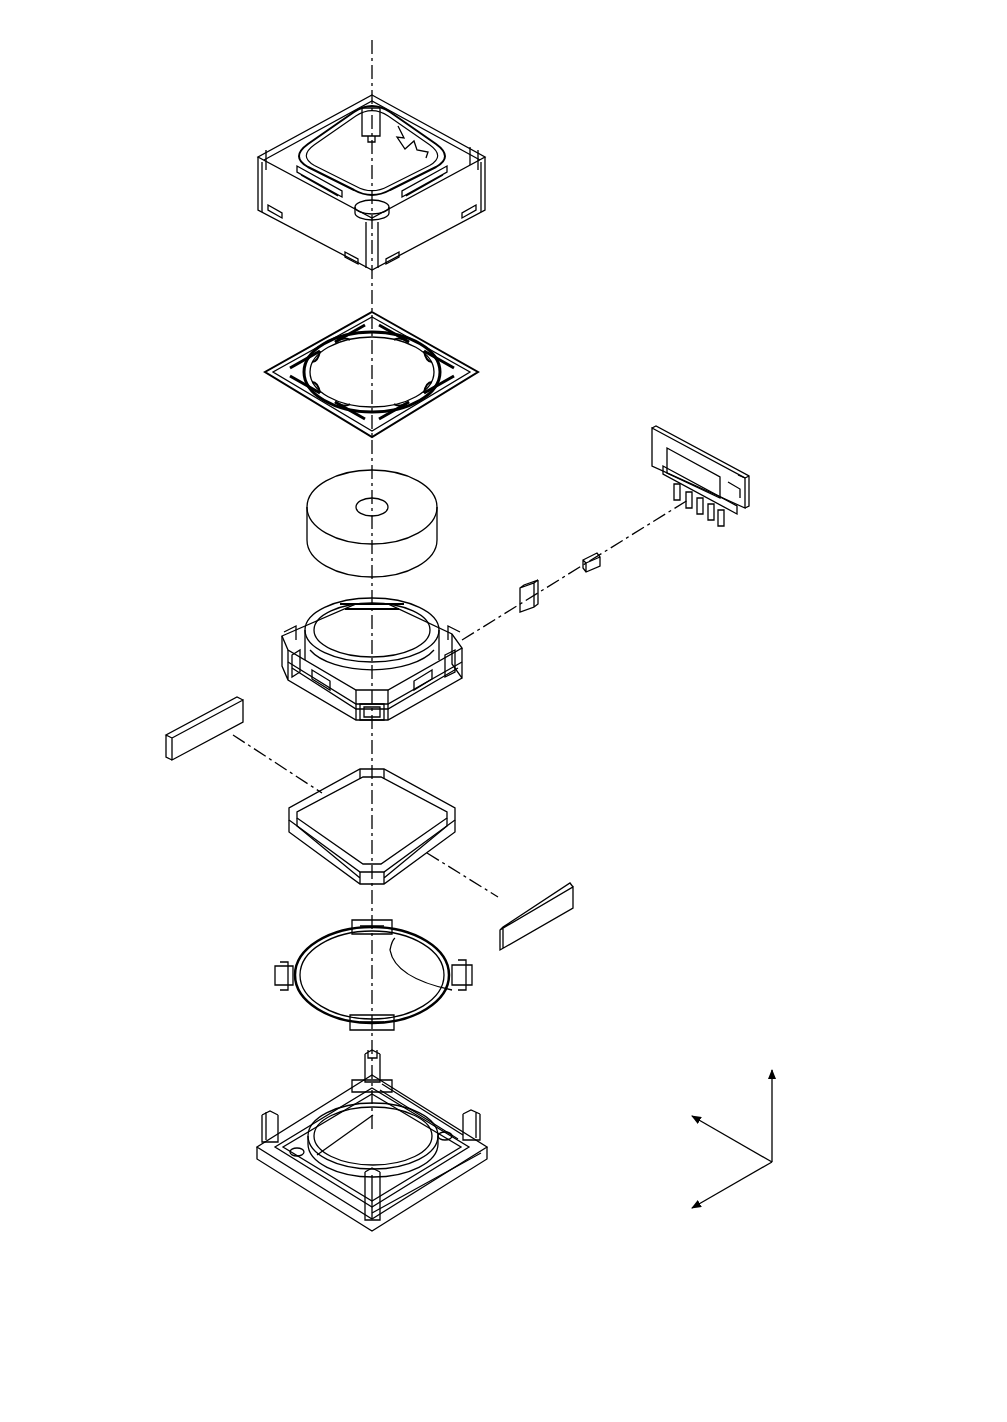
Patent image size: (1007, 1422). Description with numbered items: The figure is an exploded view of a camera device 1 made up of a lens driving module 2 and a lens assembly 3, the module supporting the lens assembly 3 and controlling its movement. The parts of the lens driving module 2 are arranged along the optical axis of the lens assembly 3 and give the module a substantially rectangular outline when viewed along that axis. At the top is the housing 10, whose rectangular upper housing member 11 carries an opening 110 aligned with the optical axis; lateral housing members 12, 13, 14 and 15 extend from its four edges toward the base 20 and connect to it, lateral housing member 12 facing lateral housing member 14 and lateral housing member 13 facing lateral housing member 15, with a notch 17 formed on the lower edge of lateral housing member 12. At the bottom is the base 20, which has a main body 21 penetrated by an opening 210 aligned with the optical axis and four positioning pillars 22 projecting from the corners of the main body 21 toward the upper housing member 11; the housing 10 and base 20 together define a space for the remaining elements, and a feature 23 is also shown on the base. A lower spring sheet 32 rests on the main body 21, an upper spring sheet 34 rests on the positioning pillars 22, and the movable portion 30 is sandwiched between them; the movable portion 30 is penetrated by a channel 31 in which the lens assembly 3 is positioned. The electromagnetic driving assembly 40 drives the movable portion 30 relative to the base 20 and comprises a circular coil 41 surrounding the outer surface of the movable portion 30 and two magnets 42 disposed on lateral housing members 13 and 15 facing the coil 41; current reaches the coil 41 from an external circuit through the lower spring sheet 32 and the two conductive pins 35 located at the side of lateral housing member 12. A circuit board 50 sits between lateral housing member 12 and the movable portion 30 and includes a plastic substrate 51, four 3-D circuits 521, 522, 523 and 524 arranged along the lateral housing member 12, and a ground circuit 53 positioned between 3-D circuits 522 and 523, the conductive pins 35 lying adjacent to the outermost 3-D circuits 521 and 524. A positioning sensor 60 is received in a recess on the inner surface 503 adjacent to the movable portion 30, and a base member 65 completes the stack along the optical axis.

The camera device 1 is at (120, 63).
The lens driving module 2 is at (528, 353).
The lens assembly 3 is at (305, 485).
The housing 10 is at (262, 137).
The upper housing member 11 is at (455, 147).
The lateral housing member 12 is at (418, 135).
The lateral housing member 13 is at (433, 218).
The lateral housing member 14 is at (310, 218).
The lateral housing member 15 is at (328, 135).
The notch 17 is at (403, 138).
The opening 110 is at (415, 165).
The base 20 is at (260, 1108).
The main body 21 is at (448, 1162).
The positioning pillar 22 is at (486, 1113).
The protrusion 23 is at (433, 1112).
The opening 210 is at (358, 1158).
The movable portion 30 is at (307, 617).
The channel 31 is at (400, 655).
The lower spring sheet 32 is at (272, 955).
The upper spring sheet 34 is at (266, 361).
The conductive pin 35 is at (452, 990).
The electromagnetic driving assembly 40 is at (188, 702).
The coil 41 is at (310, 850).
The magnet 42 is at (208, 735).
The circuit board 50 is at (703, 446).
The plastic substrate 51 is at (745, 487).
The ground circuit 53 is at (698, 512).
The inner surface 503 is at (652, 450).
The 3-D circuit 521 is at (720, 528).
The 3-D circuit 522 is at (708, 525).
The 3-D circuit 523 is at (690, 505).
The 3-D circuit 524 is at (675, 497).
The positioning sensor 60 is at (591, 572).
The base member 65 is at (529, 585).